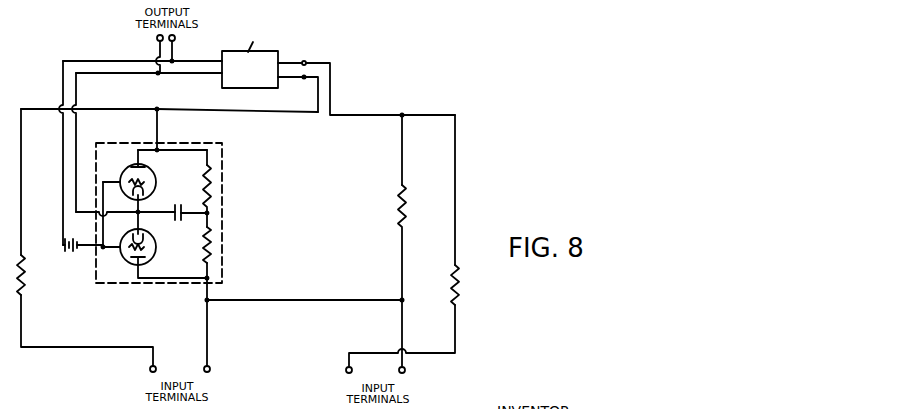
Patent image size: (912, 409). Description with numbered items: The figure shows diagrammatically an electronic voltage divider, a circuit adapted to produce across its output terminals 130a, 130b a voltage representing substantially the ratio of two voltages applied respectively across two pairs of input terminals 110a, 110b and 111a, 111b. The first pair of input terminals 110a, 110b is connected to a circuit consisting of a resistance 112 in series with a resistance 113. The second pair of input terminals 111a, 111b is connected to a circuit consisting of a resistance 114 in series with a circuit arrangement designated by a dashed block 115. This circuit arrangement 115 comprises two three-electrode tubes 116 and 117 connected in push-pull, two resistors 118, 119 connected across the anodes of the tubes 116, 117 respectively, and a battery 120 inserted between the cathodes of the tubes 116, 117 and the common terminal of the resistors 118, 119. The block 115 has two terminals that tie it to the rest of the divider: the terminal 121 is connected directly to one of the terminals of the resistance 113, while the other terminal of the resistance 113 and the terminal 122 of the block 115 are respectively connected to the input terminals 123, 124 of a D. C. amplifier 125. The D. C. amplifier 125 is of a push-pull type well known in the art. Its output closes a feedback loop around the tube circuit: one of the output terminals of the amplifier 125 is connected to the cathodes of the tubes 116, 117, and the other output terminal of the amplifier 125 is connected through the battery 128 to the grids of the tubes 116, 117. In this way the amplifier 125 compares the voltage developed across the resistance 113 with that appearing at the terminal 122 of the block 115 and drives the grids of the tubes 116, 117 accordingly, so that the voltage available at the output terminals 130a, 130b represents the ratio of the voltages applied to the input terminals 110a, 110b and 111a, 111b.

The input terminal 110a is at (327, 372).
The input terminal 110b is at (419, 372).
The input terminal 111a is at (132, 368).
The input terminal 111b is at (226, 338).
The resistance 112 is at (404, 240).
The resistance 113 is at (382, 240).
The resistance 114 is at (85, 237).
The circuit arrangement 115 is at (219, 158).
The three electrode tube 116 is at (128, 181).
The three electrode tube 117 is at (152, 245).
The resistor 118 is at (193, 188).
The resistor 119 is at (199, 258).
The battery 120 is at (141, 205).
The terminal 121 is at (304, 307).
The terminal 122 is at (169, 129).
The input terminal 123 is at (366, 82).
The input terminal 124 is at (298, 93).
The D. C. amplifier 125 is at (268, 58).
The battery 128 is at (78, 254).
The output terminal 130a is at (140, 147).
The output terminal 130b is at (147, 142).